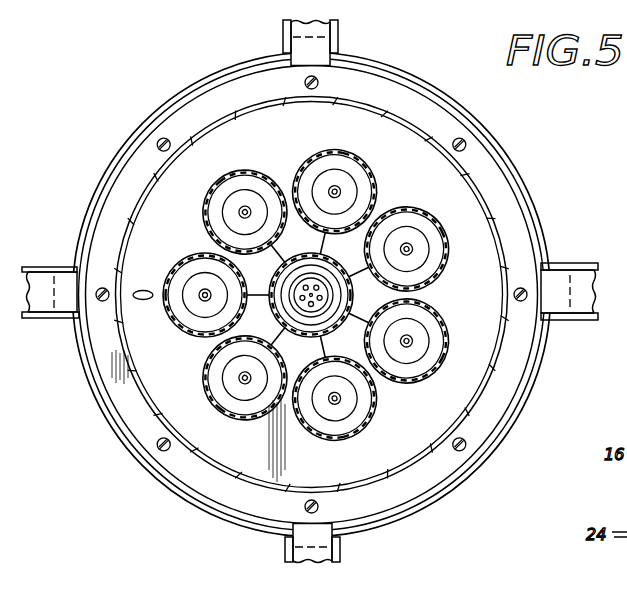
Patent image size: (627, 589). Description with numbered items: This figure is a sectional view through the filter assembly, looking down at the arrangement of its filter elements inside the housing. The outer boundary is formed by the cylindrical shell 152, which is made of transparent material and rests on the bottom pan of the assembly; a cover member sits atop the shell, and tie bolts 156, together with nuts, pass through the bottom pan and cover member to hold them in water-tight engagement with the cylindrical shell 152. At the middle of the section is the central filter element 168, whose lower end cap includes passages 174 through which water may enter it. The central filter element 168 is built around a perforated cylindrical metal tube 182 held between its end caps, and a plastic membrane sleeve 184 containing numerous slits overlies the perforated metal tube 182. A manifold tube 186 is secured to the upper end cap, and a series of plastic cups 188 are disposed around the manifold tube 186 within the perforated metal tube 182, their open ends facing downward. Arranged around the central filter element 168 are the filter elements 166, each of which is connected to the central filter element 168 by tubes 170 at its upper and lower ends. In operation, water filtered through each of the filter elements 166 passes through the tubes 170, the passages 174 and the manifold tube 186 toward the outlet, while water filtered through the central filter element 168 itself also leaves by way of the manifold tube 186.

The cylindrical shell 152 is at (388, 114).
The tie bolts 156 is at (453, 150).
The filter elements 166 is at (257, 170).
The central filter element 168 is at (355, 271).
The tubes 170 is at (261, 295).
The passages 174 is at (306, 301).
The perforated cylindrical metal tube 182 is at (343, 284).
The plastic membrane sleeve 184 is at (288, 257).
The manifold tube 186 is at (309, 314).
The cups 188 is at (325, 318).